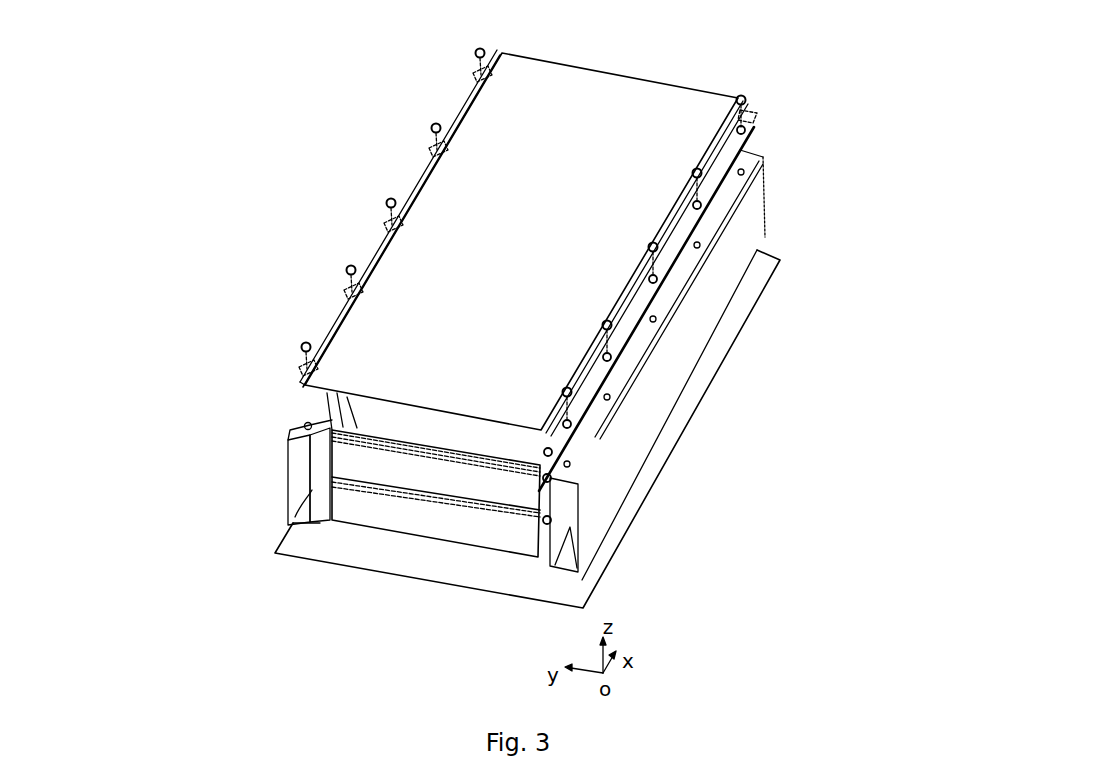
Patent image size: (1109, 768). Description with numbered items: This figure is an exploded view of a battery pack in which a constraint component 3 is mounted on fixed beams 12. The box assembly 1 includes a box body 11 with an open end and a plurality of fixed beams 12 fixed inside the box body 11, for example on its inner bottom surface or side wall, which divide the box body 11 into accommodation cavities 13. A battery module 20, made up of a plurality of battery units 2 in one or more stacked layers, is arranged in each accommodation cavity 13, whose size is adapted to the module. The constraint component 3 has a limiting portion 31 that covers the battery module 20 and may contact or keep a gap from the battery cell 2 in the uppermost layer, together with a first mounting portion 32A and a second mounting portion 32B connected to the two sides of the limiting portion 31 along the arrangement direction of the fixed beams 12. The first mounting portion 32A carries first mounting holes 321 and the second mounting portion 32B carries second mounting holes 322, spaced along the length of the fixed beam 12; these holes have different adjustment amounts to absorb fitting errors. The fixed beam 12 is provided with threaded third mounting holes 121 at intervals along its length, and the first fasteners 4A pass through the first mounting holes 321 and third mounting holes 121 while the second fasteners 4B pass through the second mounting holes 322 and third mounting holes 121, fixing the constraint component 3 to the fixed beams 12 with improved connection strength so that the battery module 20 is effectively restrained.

The box assembly 1 is at (698, 449).
The box body 11 is at (463, 573).
The fixed beam 12 is at (288, 468).
The third mounting hole 121 is at (307, 430).
The accommodation cavity 13 is at (320, 523).
The battery unit 2 is at (520, 540).
The battery module 20 is at (440, 542).
The constraint component 3 is at (689, 61).
The limiting portion 31 is at (577, 93).
The first mounting portion 32A is at (733, 147).
The second mounting portion 32B is at (467, 100).
The first mounting hole 321 is at (658, 280).
The second mounting hole 322 is at (347, 312).
The first fastener 4A is at (745, 100).
The second fastener 4B is at (384, 207).